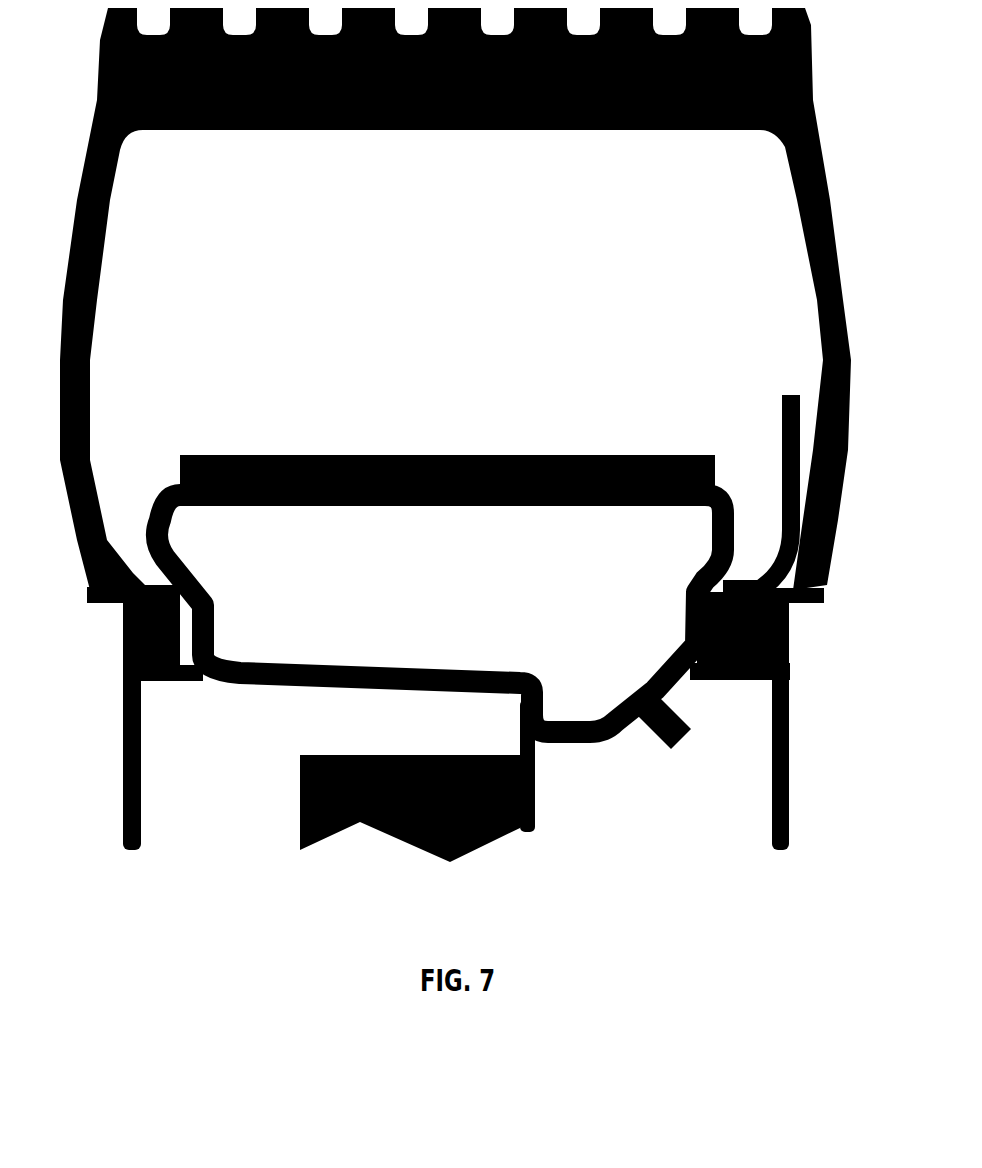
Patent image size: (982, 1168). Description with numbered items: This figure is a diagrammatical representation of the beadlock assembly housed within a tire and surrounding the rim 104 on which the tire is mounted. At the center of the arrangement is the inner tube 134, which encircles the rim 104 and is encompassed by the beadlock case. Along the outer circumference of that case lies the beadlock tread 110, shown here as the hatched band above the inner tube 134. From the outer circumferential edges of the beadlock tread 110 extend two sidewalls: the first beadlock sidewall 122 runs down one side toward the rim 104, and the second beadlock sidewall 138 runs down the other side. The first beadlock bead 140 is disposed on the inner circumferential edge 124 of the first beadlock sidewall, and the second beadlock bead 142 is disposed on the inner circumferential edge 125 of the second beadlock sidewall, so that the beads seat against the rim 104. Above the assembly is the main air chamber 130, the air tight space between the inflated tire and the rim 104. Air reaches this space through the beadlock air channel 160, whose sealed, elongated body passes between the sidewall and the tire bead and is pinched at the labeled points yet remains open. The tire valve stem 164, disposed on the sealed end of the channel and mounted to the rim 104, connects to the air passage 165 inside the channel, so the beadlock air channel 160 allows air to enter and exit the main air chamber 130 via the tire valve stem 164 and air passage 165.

The rim 104 is at (133, 704).
The beadlock tread 110 is at (340, 450).
The first beadlock sidewall 122 is at (150, 552).
The inner circumferential edge of the first beadlock sidewall 124 is at (204, 668).
The inner circumferential edge of the second beadlock sidewall 125 is at (703, 670).
The main air chamber 130 is at (190, 305).
The inner tube 134 is at (478, 675).
The second beadlock sidewall 138 is at (722, 520).
The first beadlock bead 140 is at (198, 668).
The second beadlock bead 142 is at (693, 640).
The beadlock air channel 160 is at (783, 413).
The tire valve stem 164 is at (673, 742).
The air passage 165 is at (785, 393).